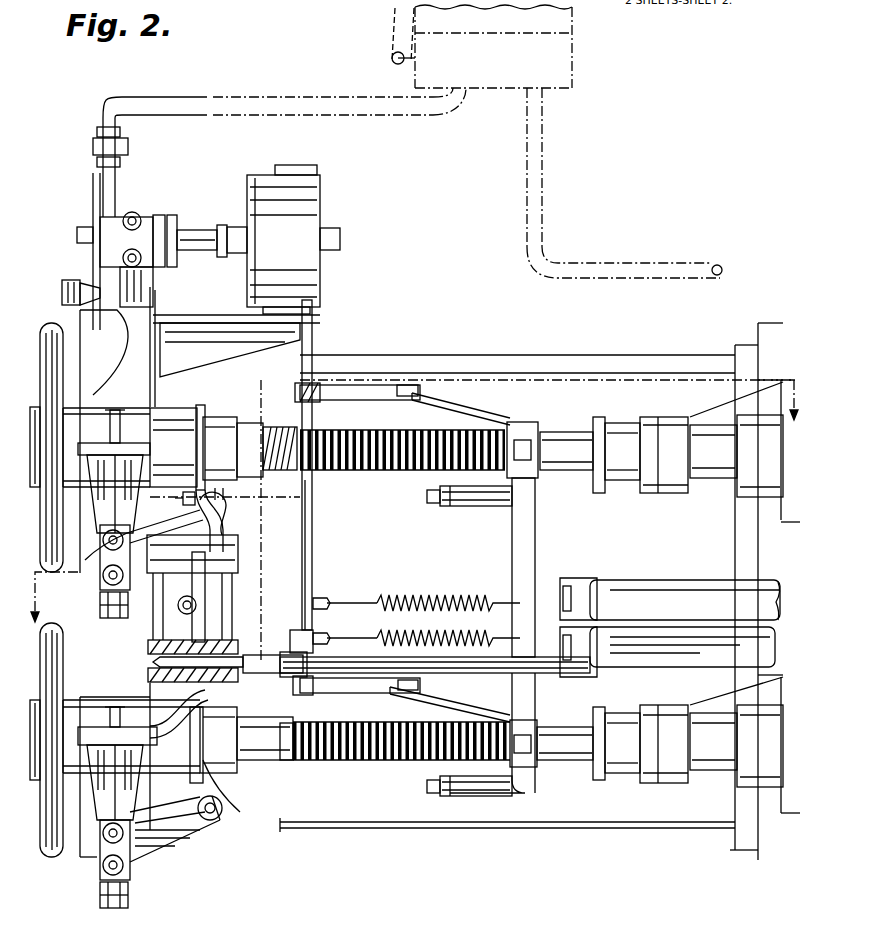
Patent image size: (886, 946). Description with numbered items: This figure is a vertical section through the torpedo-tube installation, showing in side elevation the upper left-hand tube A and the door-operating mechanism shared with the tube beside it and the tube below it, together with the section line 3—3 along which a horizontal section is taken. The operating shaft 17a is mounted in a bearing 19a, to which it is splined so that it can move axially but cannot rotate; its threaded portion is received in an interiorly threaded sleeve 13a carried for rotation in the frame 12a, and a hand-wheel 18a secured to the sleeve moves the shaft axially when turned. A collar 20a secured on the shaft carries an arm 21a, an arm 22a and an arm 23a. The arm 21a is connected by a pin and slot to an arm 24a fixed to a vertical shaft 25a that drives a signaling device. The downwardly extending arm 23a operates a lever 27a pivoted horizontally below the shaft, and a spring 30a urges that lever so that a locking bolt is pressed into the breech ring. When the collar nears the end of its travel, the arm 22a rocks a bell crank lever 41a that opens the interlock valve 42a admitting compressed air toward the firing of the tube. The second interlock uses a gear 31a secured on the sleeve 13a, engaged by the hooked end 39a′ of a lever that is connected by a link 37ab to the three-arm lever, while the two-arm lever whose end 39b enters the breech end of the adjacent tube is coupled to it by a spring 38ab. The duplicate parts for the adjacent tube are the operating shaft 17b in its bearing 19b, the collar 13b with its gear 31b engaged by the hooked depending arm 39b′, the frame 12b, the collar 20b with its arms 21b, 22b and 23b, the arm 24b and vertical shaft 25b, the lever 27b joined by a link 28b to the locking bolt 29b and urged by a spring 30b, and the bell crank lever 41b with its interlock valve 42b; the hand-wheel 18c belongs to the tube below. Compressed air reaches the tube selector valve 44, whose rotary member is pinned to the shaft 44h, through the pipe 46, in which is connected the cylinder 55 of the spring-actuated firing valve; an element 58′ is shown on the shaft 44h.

The compressed air pipe 46 is at (270, 100).
The firing valve cylinder 55 is at (482, 46).
The tube selector valve 44 is at (145, 215).
The shaft 44h is at (185, 232).
The motor cylinder 58′ is at (300, 212).
The hand-wheel 18a is at (50, 330).
The frame 12a is at (83, 415).
The gear 31a is at (196, 418).
The hook end of lever 39a′ is at (203, 460).
The interiorly threaded sleeve 13a is at (248, 435).
The vertical shaft 25a is at (312, 340).
The arm 24a is at (355, 388).
The arm 21a is at (465, 408).
The operating shaft 17a is at (362, 440).
The collar 20a is at (538, 432).
The bearing 19a is at (661, 456).
The link 37ab is at (196, 498).
The bell crank lever 41a is at (222, 525).
The arm 22a is at (470, 500).
The arm 23a is at (527, 548).
The vertical shaft 25b is at (312, 545).
The spring 38ab is at (205, 605).
The spring 30a is at (413, 597).
The spring 30b is at (385, 645).
The locking bolt 29b is at (240, 660).
The lever 27a is at (595, 585).
The lever 27b is at (590, 672).
The link 28b is at (540, 673).
The lever end 39b is at (90, 560).
The interlock valve 42a is at (98, 585).
The frame 12b is at (123, 720).
The collar 13b is at (255, 722).
The arm 24b is at (360, 683).
The arm 21b is at (450, 702).
The arm 23b is at (512, 694).
The operating shaft 17b is at (360, 762).
The arm 22b is at (466, 798).
The collar 20b is at (538, 767).
The bearing 19b is at (660, 746).
The hooked depending arm of lever 39b′ is at (205, 755).
The gear 31b is at (218, 795).
The bell crank lever 41b is at (220, 822).
The interlock valve 42b is at (130, 860).
The hand-wheel 18c is at (52, 860).
The section line 3 is at (414, 501).
The upper left-hand tube A is at (654, 531).